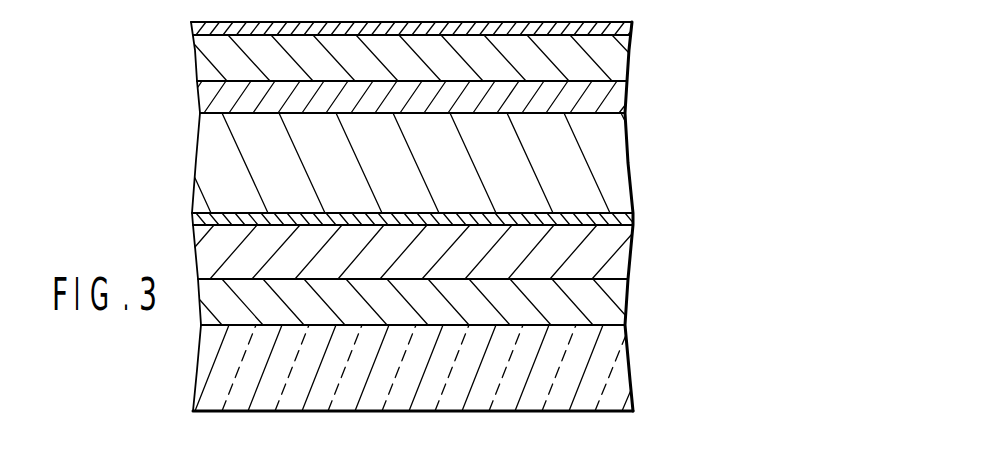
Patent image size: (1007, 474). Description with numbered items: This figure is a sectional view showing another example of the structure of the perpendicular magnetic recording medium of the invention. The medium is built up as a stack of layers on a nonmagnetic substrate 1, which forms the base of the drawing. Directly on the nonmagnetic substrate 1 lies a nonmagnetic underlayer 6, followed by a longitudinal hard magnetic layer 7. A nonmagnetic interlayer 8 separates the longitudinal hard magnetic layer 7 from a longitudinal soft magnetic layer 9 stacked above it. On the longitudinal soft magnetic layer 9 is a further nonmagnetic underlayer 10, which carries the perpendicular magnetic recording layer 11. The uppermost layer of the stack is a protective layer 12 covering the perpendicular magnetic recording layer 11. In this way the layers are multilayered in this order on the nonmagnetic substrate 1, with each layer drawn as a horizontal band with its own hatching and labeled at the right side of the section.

The nonmagnetic substrate 1 is at (615, 380).
The nonmagnetic underlayer 6 is at (613, 305).
The longitudinal hard magnetic layer 7 is at (618, 252).
The nonmagnetic interlayer 8 is at (633, 218).
The longitudinal soft magnetic layer 9 is at (615, 162).
The nonmagnetic underlayer 10 is at (613, 97).
The perpendicular magnetic recording layer 11 is at (617, 60).
The protective layer 12 is at (622, 28).